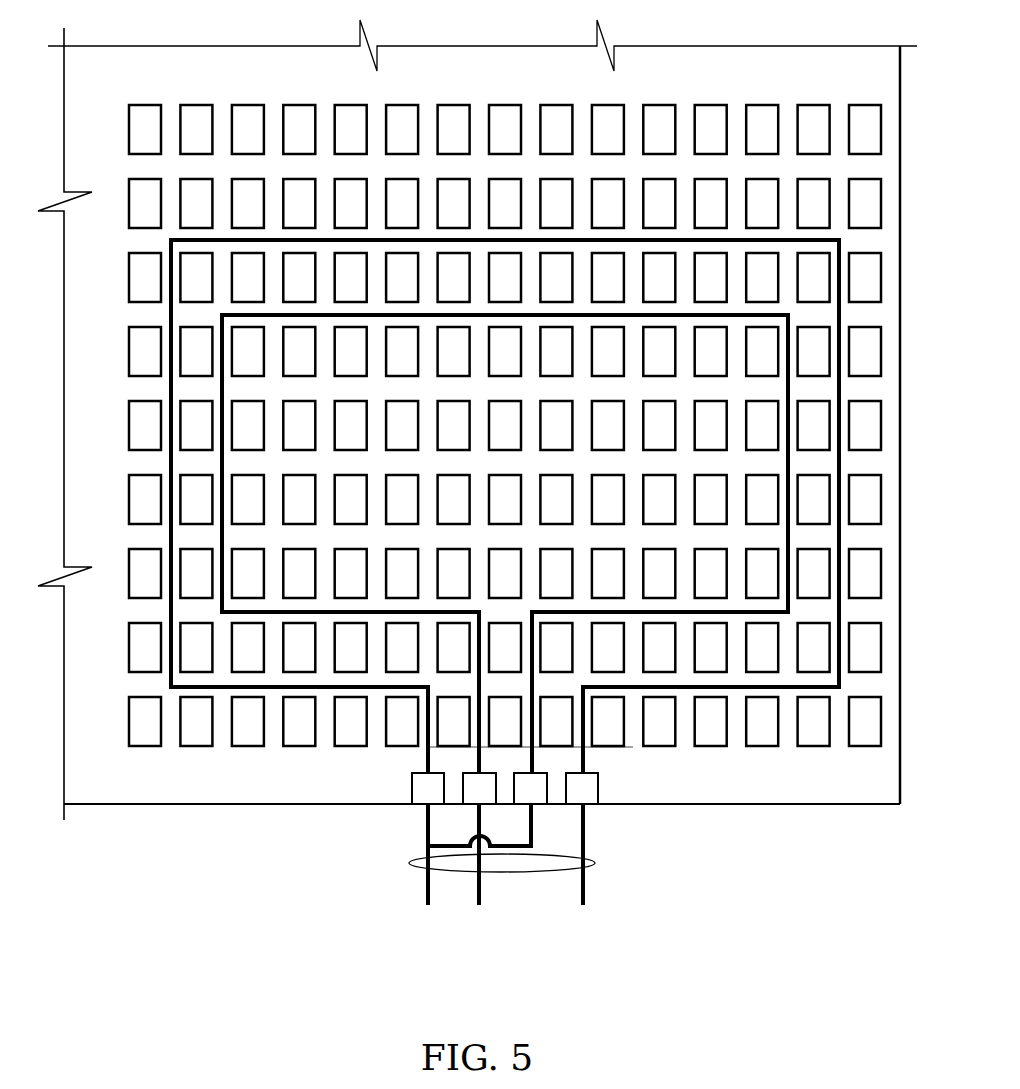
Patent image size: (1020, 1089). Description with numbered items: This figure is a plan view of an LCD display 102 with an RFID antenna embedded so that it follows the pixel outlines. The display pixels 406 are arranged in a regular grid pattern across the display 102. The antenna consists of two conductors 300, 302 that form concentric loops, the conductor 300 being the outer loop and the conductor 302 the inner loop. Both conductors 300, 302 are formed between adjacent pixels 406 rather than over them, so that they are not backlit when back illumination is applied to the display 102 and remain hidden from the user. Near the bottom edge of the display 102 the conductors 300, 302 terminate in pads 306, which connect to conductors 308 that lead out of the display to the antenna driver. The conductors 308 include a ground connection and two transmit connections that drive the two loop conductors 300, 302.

The display 102 is at (183, 806).
The conductor 300 is at (171, 460).
The conductor 302 is at (222, 385).
The pads 306 is at (473, 795).
The conductors 308 is at (590, 867).
The display pixels 406 is at (195, 105).